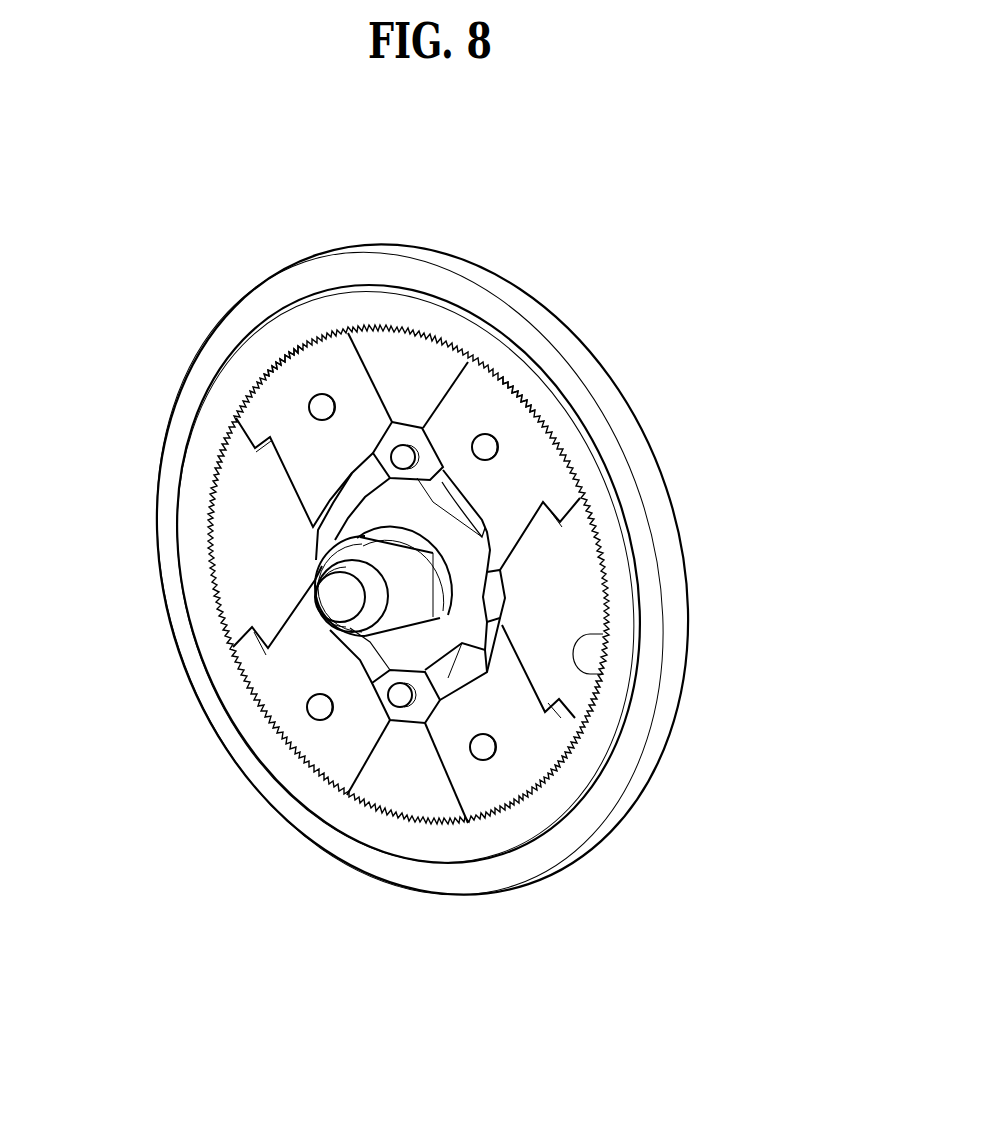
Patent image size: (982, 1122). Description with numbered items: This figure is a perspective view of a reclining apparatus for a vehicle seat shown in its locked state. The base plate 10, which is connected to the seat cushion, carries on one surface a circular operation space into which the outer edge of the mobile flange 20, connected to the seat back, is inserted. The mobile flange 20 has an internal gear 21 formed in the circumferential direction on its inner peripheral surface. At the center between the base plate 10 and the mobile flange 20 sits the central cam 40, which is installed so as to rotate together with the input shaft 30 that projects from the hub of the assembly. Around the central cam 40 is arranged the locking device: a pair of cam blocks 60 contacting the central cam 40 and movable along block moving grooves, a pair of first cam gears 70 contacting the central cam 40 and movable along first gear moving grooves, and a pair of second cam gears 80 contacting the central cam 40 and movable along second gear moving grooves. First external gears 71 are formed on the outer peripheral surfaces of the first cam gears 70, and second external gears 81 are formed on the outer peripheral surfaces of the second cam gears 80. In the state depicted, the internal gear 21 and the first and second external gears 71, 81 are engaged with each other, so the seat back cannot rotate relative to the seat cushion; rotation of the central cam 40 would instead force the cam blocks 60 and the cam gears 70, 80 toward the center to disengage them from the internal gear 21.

The base plate 10 is at (655, 487).
The mobile flange 20 is at (568, 592).
The internal gear 21 is at (596, 676).
The input shaft 30 is at (337, 598).
The central cam 40 is at (365, 510).
The cam blocks 60 is at (407, 437).
The first cam gears 70 is at (322, 360).
The first external gears 71 is at (278, 357).
The second cam gears 80 is at (518, 453).
The second external gears 81 is at (520, 397).